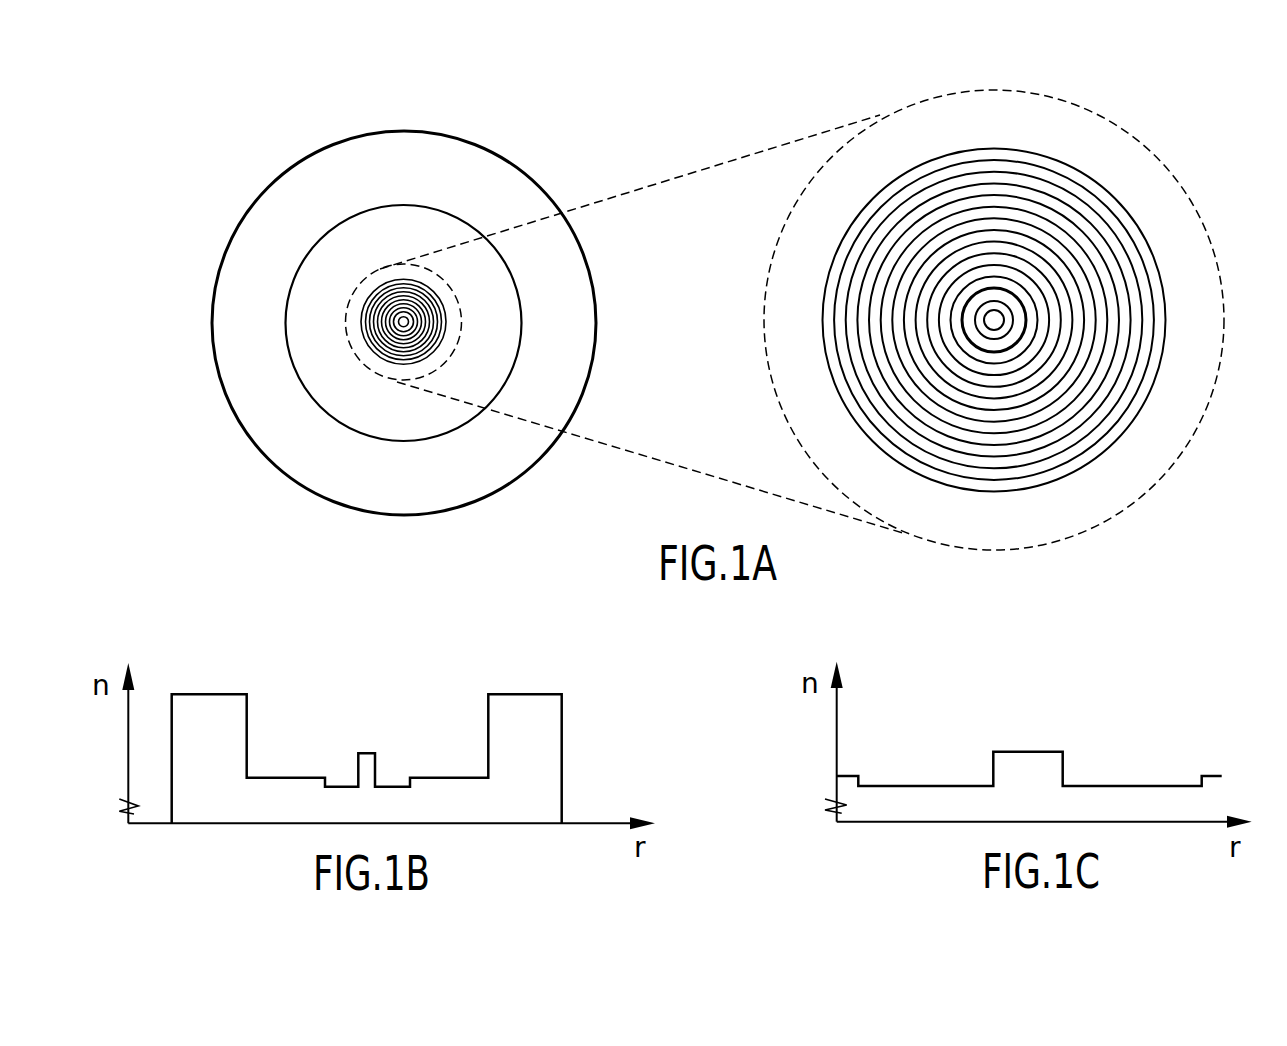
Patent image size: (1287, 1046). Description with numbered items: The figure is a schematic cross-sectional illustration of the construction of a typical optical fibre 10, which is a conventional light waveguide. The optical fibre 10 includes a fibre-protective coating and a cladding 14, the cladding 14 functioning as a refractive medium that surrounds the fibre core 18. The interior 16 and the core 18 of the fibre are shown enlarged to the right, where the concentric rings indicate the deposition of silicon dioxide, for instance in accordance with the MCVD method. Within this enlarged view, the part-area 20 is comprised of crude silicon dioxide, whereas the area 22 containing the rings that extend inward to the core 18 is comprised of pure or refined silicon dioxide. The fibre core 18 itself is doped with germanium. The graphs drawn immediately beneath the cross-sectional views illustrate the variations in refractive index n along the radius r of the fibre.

The optical fibre 10 is at (465, 102).
The cladding 14 is at (362, 242).
The interior 16 is at (462, 318).
The fibre core 18 is at (1027, 316).
The part-area 20 is at (888, 138).
The area containing the rings 22 is at (959, 150).